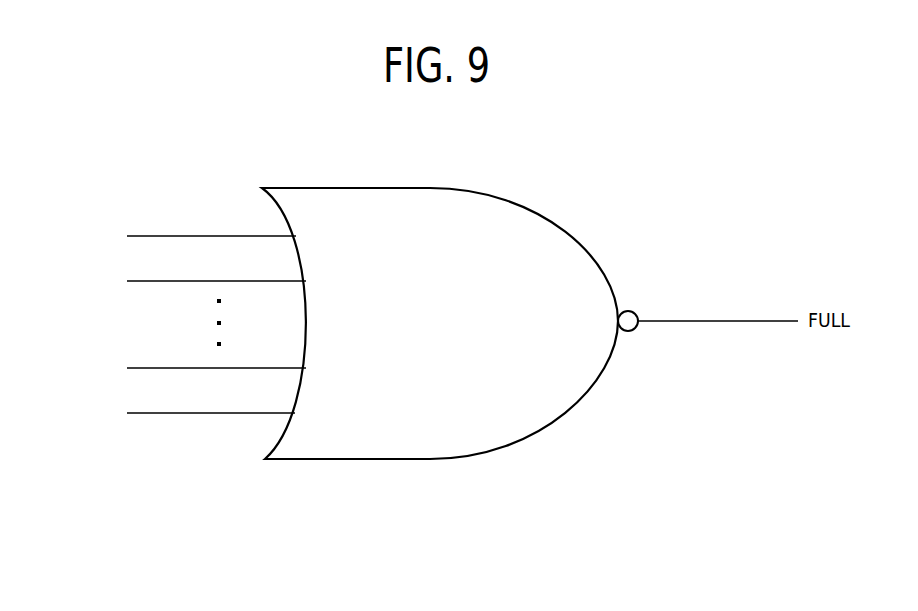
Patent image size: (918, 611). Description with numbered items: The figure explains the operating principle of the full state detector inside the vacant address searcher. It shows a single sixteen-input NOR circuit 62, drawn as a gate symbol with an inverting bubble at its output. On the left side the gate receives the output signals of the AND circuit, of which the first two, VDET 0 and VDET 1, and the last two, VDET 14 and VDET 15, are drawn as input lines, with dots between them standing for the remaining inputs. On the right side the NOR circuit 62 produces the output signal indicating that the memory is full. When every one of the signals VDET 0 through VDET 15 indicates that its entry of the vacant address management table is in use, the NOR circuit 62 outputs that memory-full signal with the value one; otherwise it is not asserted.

The NOR circuit 62 is at (544, 220).
The output signal VDET0 0 is at (174, 236).
The output signal VDET1 1 is at (179, 281).
The output signal VDET14 14 is at (179, 368).
The output signal VDET15 15 is at (173, 413).